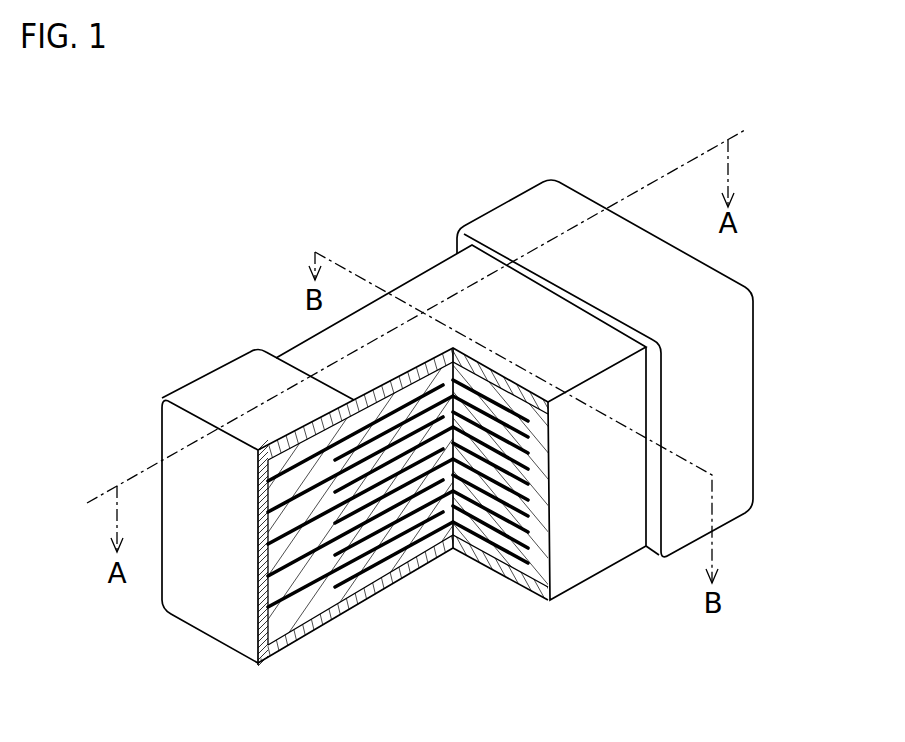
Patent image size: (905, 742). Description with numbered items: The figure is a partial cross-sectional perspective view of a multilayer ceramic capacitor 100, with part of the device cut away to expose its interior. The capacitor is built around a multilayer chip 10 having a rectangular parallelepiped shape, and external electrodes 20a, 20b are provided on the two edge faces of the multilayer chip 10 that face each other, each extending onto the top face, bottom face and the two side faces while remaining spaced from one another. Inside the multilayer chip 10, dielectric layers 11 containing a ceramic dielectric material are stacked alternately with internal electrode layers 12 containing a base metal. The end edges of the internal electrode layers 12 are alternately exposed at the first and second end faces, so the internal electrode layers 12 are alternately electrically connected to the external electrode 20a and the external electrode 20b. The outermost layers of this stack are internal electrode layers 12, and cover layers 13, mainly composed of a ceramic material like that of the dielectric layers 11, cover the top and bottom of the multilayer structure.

The multilayer ceramic capacitor 100 is at (851, 110).
The multilayer chip 10 is at (300, 345).
The dielectric layer 11 is at (421, 513).
The internal electrode layer 12 is at (383, 536).
The cover layer 13 is at (430, 290).
The external electrode 20a is at (190, 383).
The external electrode 20b is at (512, 217).